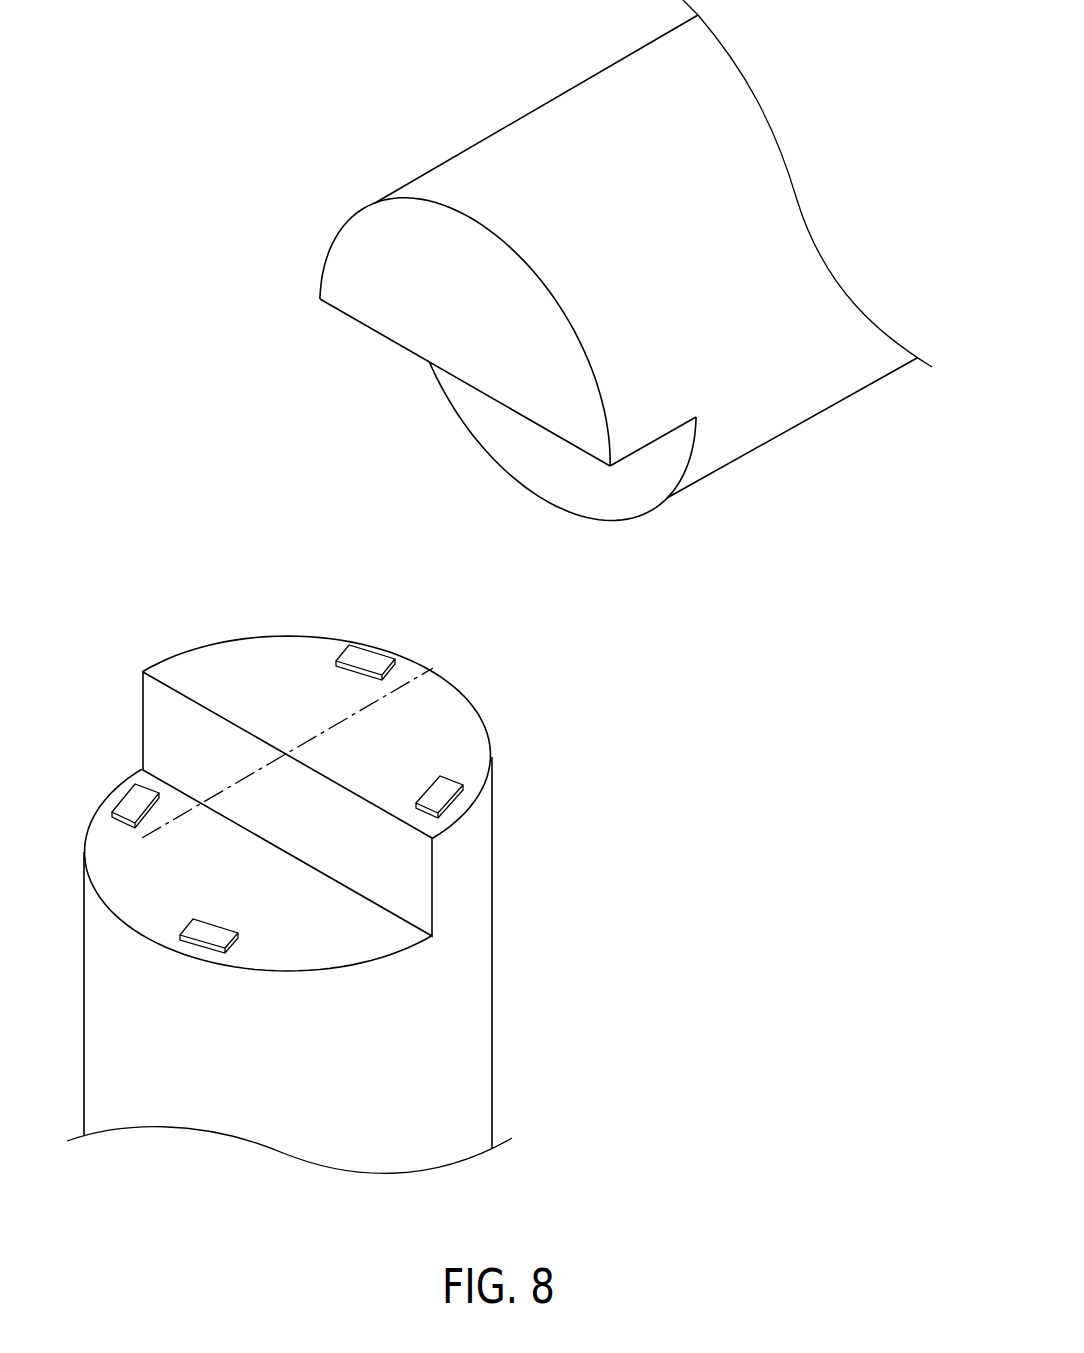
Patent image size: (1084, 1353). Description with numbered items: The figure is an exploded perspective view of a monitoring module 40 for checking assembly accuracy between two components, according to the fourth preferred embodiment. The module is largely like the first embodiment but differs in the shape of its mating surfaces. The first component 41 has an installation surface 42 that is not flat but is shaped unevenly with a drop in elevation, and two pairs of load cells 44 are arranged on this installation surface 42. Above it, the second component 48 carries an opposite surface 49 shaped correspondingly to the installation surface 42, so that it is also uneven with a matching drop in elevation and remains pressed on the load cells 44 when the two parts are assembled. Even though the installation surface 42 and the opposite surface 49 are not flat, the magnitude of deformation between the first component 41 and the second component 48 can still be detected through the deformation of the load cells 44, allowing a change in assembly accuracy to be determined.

The monitoring module 40 is at (140, 225).
The first component 41 is at (493, 999).
The installation surface 42 is at (430, 718).
The load cells 44 is at (372, 647).
The second component 48 is at (785, 433).
The opposite surface 49 is at (597, 495).